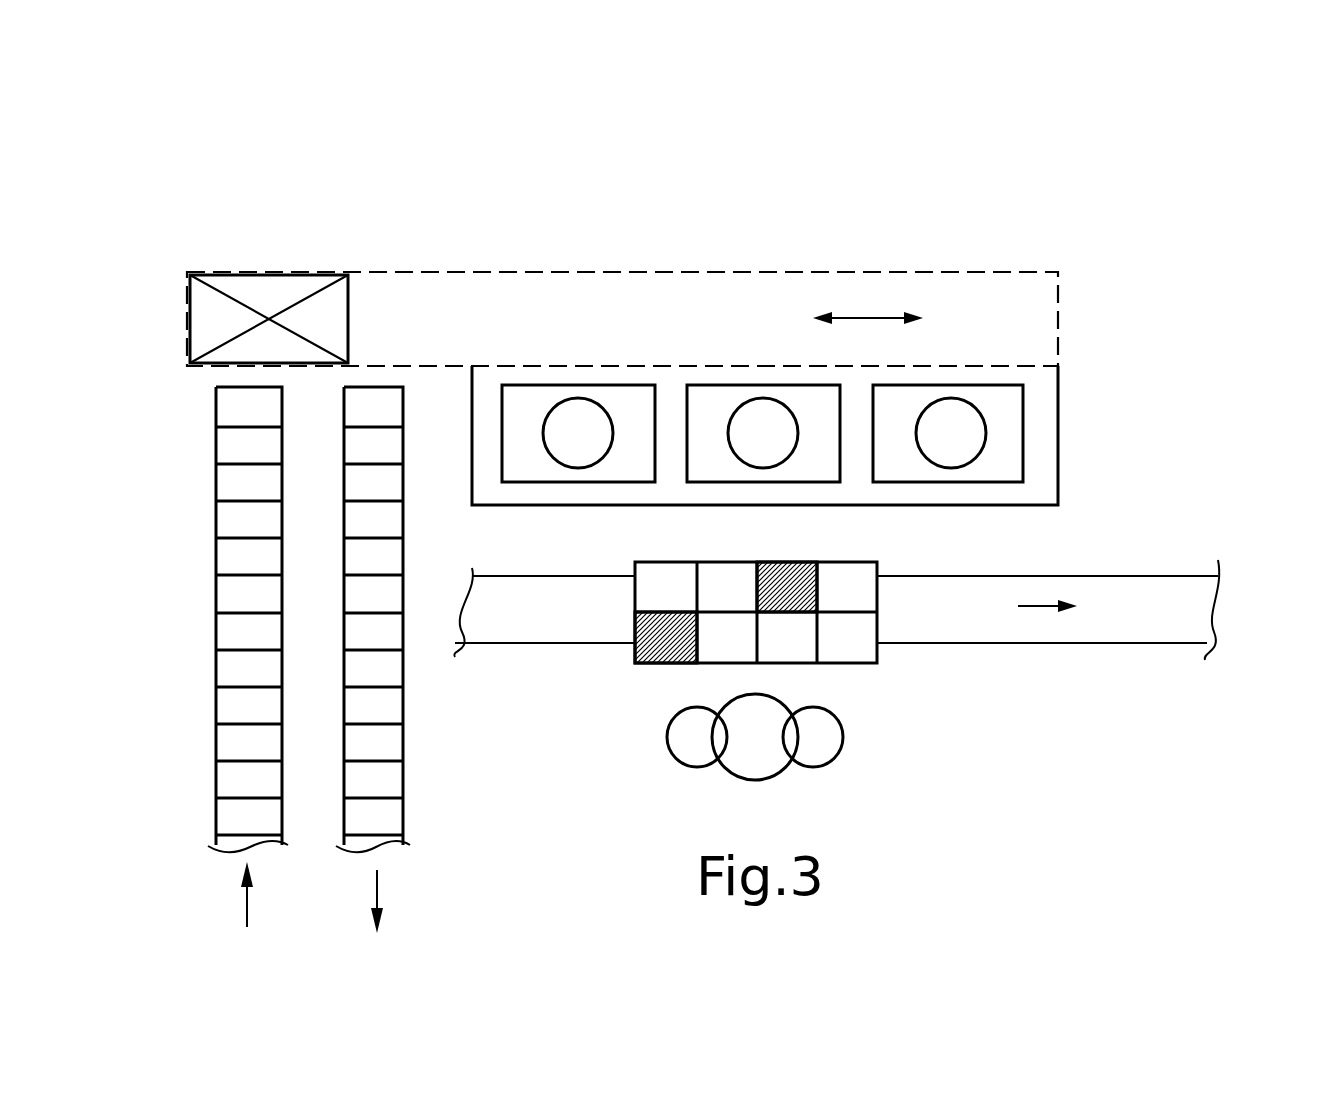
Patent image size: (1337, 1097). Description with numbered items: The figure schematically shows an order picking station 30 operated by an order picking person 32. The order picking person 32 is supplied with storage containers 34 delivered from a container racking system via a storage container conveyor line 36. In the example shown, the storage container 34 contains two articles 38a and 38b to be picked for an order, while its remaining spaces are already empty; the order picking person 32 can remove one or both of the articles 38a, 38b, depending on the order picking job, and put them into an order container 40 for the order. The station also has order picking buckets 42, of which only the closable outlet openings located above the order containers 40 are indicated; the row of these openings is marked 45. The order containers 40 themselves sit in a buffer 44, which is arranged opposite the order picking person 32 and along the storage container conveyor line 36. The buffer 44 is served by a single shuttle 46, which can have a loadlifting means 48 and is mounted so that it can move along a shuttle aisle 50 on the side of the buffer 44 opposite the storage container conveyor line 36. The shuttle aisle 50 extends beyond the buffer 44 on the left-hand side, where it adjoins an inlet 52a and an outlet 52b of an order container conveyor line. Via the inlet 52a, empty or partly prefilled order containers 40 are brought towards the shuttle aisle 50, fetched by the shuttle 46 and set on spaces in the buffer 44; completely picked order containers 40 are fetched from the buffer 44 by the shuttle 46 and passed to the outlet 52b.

The order picking station 30 is at (1150, 222).
The order picking person 32 is at (843, 740).
The storage container 34 is at (878, 563).
The storage container conveyor line 36 is at (1142, 598).
The article 38a is at (660, 664).
The article 38b is at (792, 582).
The order container 40 is at (522, 483).
The order picking bucket 42 is at (612, 410).
The buffer 44 is at (1060, 419).
The holder row 45 is at (868, 403).
The shuttle 46 is at (210, 272).
The loadlifting means 48 is at (290, 298).
The shuttle aisle 50 is at (1010, 336).
The inlet 52a is at (216, 560).
The outlet 52b is at (350, 562).